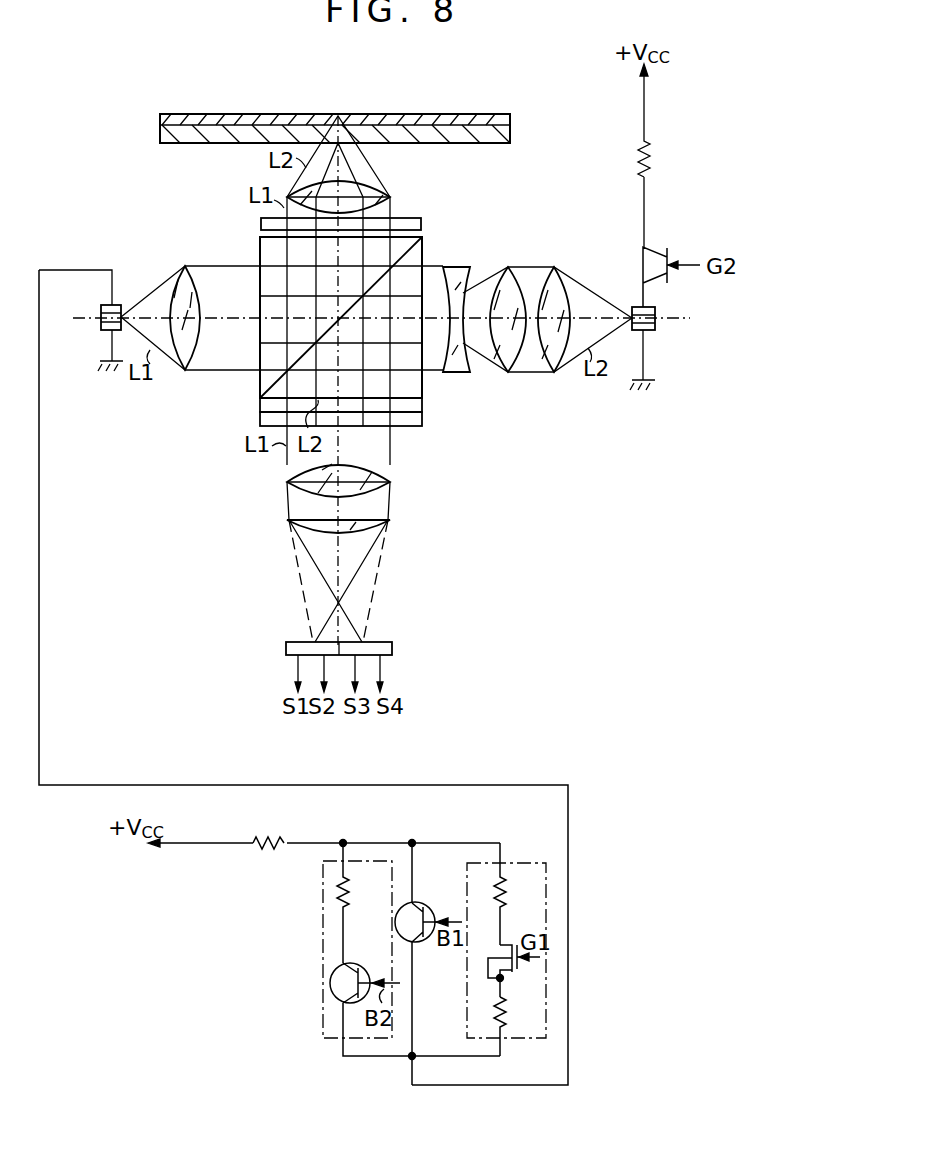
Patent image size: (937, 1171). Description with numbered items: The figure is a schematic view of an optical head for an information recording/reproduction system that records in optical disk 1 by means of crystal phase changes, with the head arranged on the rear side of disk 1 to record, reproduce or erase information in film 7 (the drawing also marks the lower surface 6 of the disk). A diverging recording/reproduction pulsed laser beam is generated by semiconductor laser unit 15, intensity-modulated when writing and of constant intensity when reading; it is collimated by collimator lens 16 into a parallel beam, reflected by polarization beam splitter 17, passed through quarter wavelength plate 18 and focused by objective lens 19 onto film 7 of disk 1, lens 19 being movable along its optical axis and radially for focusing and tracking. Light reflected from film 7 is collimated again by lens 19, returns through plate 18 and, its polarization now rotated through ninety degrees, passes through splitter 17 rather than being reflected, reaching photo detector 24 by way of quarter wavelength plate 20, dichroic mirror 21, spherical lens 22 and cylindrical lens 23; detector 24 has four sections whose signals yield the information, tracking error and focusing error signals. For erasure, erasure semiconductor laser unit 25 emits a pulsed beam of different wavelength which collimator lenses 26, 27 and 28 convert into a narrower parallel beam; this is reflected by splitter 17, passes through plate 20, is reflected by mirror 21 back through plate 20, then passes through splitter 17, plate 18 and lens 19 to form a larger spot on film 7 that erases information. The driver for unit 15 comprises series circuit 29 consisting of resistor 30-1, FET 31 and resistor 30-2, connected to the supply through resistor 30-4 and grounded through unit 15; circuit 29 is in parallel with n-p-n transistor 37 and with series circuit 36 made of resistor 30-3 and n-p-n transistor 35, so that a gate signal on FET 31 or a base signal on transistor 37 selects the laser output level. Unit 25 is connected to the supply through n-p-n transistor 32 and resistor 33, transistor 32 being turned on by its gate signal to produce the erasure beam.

The optical disk 1 is at (512, 127).
The lower surface of plate 6 is at (500, 143).
The film 7 is at (503, 86).
The semiconductor laser unit 15 is at (100, 322).
The collimator lens 16 is at (192, 345).
The polarization beam splitter 17 is at (258, 248).
The quarter wavelength plate 18 is at (422, 224).
The objective lens 19 is at (378, 190).
The quarter wavelength plate 20 is at (423, 405).
The dichroic mirror 21 is at (423, 422).
The spherical lens 22 is at (380, 488).
The cylindrical lens 23 is at (386, 524).
The photo detector 24 is at (393, 648).
The erasure semiconductor laser unit 25 is at (652, 332).
The collimator lens 26 is at (556, 268).
The collimator lens 27 is at (510, 268).
The collimator lens 28 is at (458, 268).
The series circuit 29 is at (547, 906).
The resistor 30-1 is at (500, 876).
The resistor 30-2 is at (506, 1015).
The resistor 30-3 is at (337, 888).
The resistor 30-4 is at (268, 820).
The FET 31 is at (512, 972).
The n-p-n transistor 32 is at (672, 248).
The resistor 33 is at (650, 158).
The n-p-n transistor 35 is at (330, 993).
The series circuit 36 is at (322, 1022).
The n-p-n transistor 37 is at (418, 903).